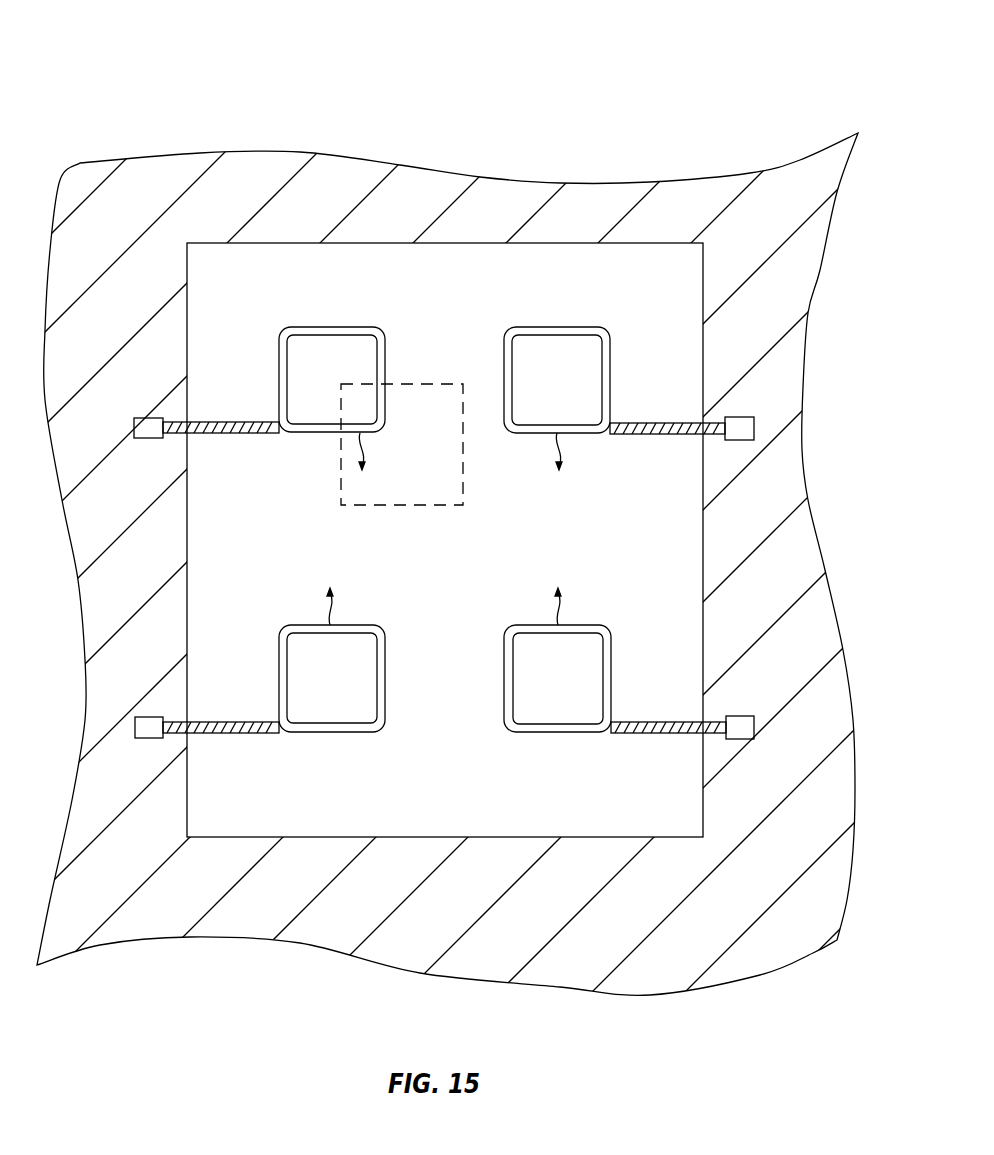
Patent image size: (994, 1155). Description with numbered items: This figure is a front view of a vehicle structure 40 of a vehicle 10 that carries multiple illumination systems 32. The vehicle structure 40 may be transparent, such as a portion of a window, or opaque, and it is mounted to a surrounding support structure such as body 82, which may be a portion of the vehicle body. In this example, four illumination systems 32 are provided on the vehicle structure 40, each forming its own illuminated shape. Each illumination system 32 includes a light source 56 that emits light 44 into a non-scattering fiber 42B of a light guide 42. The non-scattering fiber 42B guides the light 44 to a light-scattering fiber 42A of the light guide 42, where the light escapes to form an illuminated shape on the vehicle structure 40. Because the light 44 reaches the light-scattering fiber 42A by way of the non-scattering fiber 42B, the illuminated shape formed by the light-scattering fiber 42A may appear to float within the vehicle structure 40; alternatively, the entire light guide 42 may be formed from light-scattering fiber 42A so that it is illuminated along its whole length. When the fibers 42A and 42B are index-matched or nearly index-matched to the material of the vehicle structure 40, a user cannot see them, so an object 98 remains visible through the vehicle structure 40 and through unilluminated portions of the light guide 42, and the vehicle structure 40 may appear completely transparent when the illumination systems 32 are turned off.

The vehicle 10 is at (497, 577).
The illumination system 32 is at (444, 582).
The vehicle structure 40 is at (680, 540).
The light guide 42 is at (444, 533).
The light-scattering fiber 42A is at (352, 326).
The non-scattering fiber 42B is at (204, 434).
The light 44 is at (372, 445).
The light source 56 is at (147, 429).
The body 82 is at (835, 783).
The object 98 is at (409, 492).